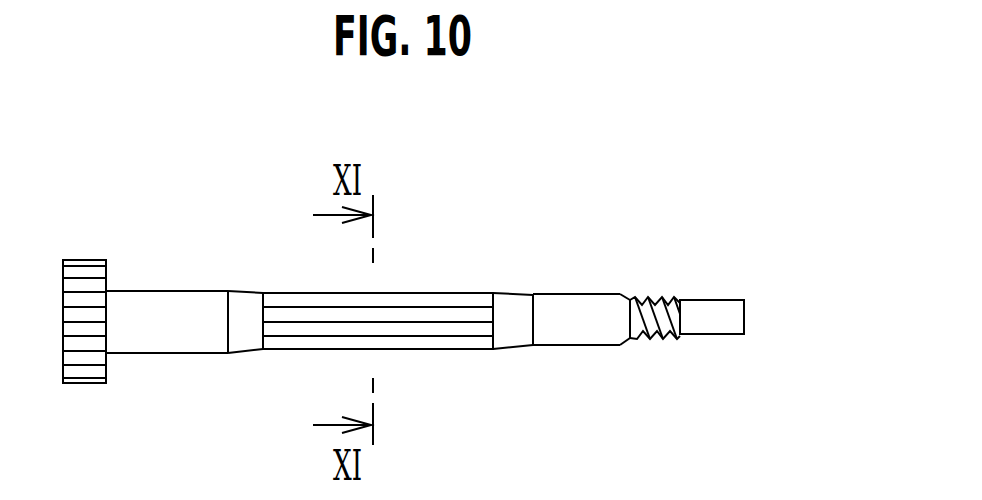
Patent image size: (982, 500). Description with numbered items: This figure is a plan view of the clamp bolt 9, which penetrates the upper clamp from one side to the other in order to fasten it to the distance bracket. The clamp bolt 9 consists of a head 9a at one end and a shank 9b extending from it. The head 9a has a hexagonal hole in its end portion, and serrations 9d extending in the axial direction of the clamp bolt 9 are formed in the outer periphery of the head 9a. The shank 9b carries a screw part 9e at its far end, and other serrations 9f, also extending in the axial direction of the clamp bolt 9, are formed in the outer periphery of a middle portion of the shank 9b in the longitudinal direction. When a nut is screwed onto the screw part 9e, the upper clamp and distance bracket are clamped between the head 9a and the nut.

The clamp bolt 9 is at (468, 249).
The head 9a is at (83, 269).
The shank 9b is at (187, 298).
The serrations 9d is at (83, 376).
The screw part 9e is at (657, 297).
The serrations 9f is at (460, 336).